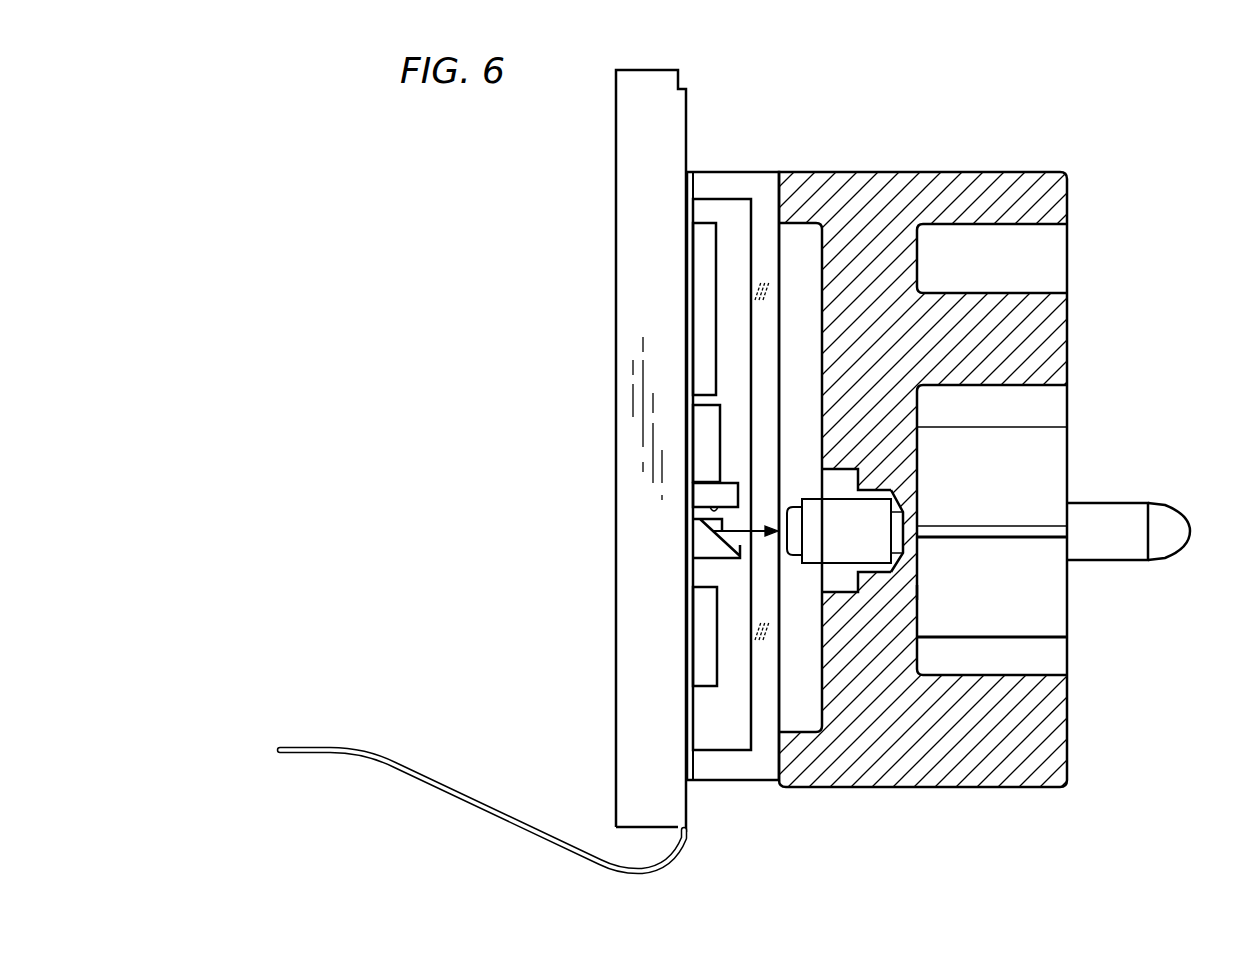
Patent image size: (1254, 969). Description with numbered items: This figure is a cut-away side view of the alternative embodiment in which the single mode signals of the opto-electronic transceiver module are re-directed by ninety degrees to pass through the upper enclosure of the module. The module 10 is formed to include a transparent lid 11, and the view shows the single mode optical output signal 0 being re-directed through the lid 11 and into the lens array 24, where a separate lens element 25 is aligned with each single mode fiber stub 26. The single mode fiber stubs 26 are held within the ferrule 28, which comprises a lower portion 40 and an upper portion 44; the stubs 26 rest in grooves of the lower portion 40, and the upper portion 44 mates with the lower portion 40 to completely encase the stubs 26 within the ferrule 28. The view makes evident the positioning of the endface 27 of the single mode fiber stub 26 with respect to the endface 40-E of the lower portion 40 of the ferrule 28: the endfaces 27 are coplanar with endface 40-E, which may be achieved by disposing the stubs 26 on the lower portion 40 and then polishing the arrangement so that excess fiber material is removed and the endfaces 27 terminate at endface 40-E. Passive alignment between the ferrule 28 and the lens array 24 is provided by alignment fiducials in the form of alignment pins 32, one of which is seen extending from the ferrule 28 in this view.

The module 10 is at (640, 132).
The transparent lid 11 is at (735, 175).
The lens array 24 is at (831, 556).
The lens element 25 is at (896, 525).
The single mode fiber stub 26 is at (1013, 527).
The endface 27 is at (905, 503).
The ferrule 28 is at (1040, 610).
The alignment pin 32 is at (1115, 512).
The lower portion 40 is at (1069, 581).
The endface of lower portion 40-E is at (918, 590).
The upper portion 44 is at (1045, 435).
The single mode optical output signal 0 is at (745, 535).